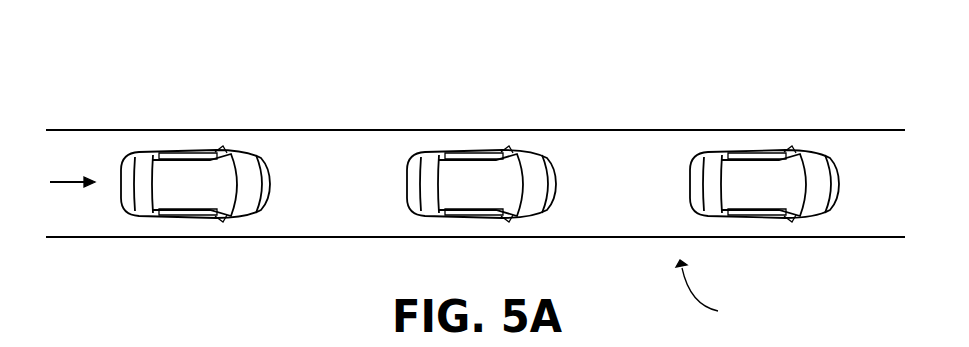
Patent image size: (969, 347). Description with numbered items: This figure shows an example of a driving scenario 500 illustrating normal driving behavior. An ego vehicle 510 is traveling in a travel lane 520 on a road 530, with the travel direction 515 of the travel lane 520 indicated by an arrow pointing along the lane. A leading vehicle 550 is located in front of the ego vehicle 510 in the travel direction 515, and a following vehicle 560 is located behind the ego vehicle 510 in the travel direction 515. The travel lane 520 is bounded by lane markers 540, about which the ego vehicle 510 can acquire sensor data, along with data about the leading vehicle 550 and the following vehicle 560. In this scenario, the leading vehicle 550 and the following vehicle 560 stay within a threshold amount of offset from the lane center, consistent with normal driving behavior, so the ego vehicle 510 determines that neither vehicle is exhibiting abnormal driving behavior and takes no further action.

The driving scenario 500 is at (345, 34).
The ego vehicle 510 is at (522, 150).
The travel direction 515 is at (65, 183).
The travel lane 520 is at (878, 230).
The road 530 is at (716, 292).
The lane markers 540 is at (637, 130).
The leading vehicle 550 is at (802, 150).
The following vehicle 560 is at (160, 150).